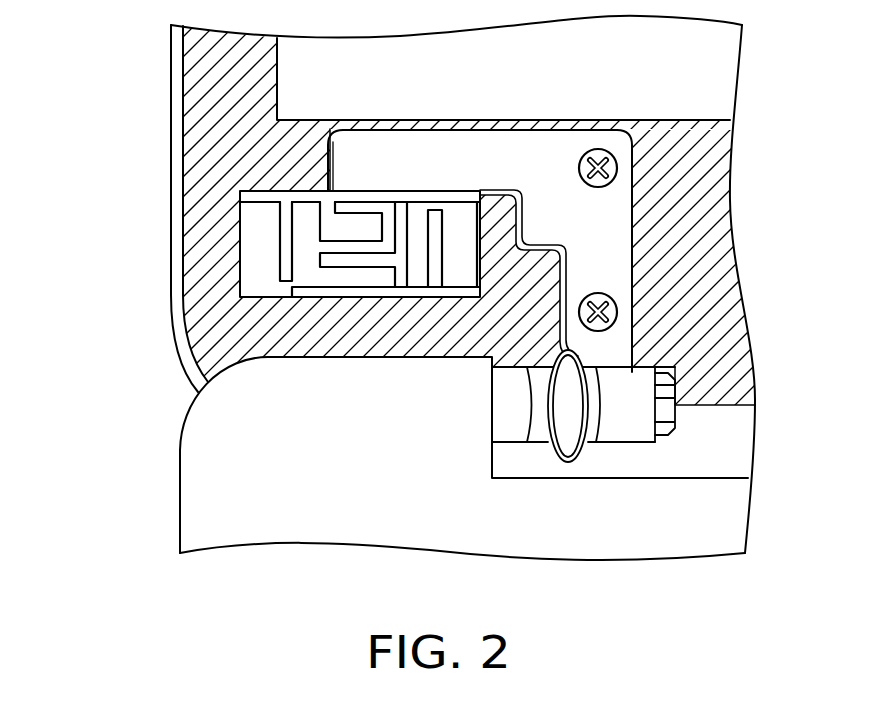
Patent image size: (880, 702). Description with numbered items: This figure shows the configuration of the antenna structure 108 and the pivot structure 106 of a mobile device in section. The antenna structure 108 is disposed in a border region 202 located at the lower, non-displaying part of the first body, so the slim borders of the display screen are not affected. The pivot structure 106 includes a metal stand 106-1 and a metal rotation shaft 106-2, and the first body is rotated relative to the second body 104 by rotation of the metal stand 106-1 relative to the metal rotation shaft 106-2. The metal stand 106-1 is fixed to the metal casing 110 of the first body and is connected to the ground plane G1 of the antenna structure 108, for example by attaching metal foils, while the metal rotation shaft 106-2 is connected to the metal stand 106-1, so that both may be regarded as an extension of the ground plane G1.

The second body 104 is at (163, 476).
The pivot structure 106 is at (655, 343).
The metal stand 106-1 is at (530, 128).
The metal rotation shaft 106-2 is at (627, 435).
The antenna structure 108 is at (234, 298).
The metal casing 110 is at (171, 147).
The border region 202 is at (200, 222).
The ground plane G1 is at (388, 192).